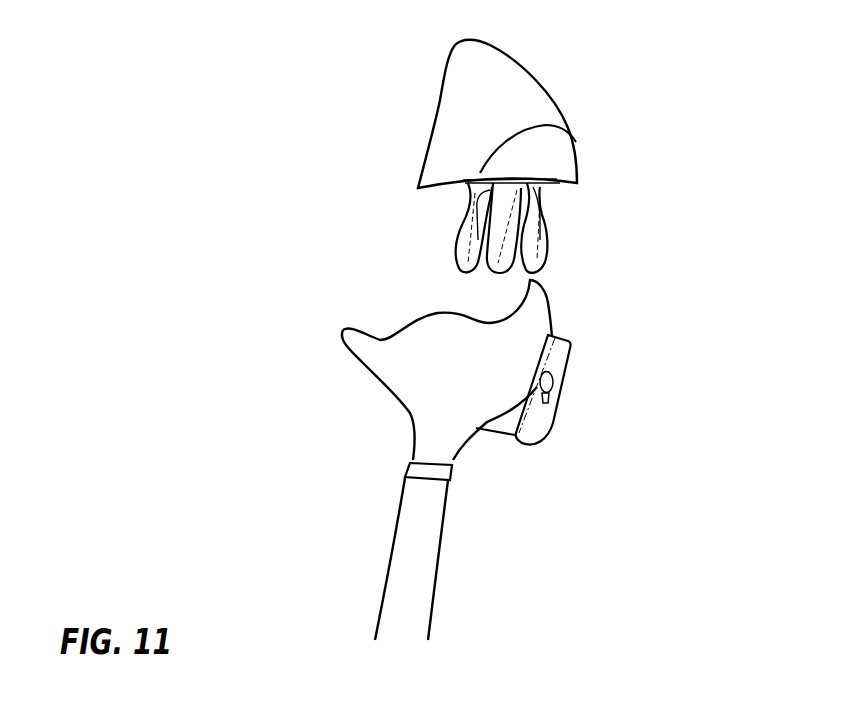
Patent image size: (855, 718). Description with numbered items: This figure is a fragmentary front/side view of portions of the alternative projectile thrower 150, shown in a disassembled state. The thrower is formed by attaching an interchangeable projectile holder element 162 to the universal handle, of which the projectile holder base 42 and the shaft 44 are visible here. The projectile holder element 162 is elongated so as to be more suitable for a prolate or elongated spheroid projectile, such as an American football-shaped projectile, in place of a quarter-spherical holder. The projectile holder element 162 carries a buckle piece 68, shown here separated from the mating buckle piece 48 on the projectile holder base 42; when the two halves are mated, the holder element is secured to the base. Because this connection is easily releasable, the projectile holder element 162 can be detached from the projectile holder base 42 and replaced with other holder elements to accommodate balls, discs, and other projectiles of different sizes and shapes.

The alternative projectile thrower 150 is at (312, 222).
The projectile holder element 162 is at (497, 65).
The buckle piece 68 is at (547, 190).
The projectile holder base 42 is at (437, 423).
The buckle piece 48 is at (560, 355).
The shaft 44 is at (415, 610).